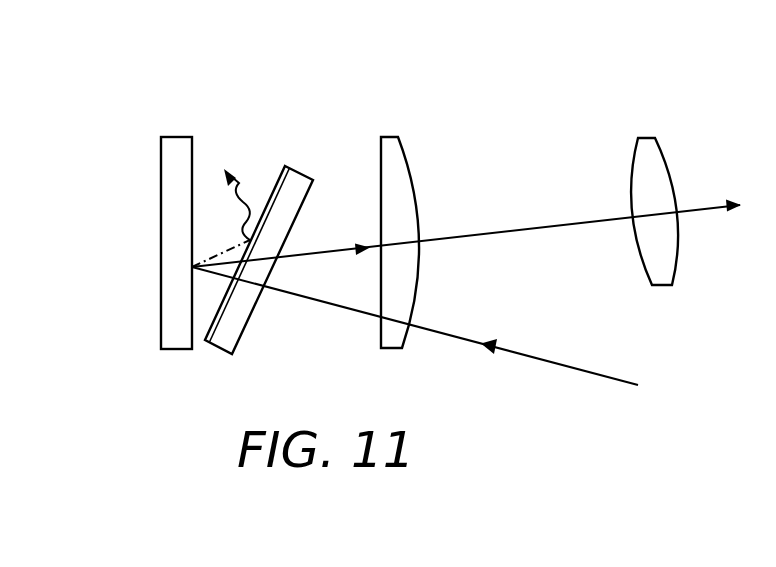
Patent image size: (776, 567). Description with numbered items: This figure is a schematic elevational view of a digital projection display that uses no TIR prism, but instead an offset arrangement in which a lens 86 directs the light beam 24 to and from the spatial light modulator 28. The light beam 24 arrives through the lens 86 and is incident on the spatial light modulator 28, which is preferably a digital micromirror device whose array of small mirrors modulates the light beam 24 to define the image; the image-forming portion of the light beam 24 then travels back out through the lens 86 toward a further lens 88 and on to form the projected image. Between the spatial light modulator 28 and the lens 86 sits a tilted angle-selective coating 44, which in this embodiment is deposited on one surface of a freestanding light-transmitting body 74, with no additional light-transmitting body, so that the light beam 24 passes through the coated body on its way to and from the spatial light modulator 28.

The light beam 24 is at (535, 228).
The spatial light modulator 28 is at (173, 349).
The angle-selective coating 44 is at (281, 178).
The light-transmitting body 74 is at (223, 337).
The lens 86 is at (392, 136).
The biconvex lens 88 is at (650, 137).